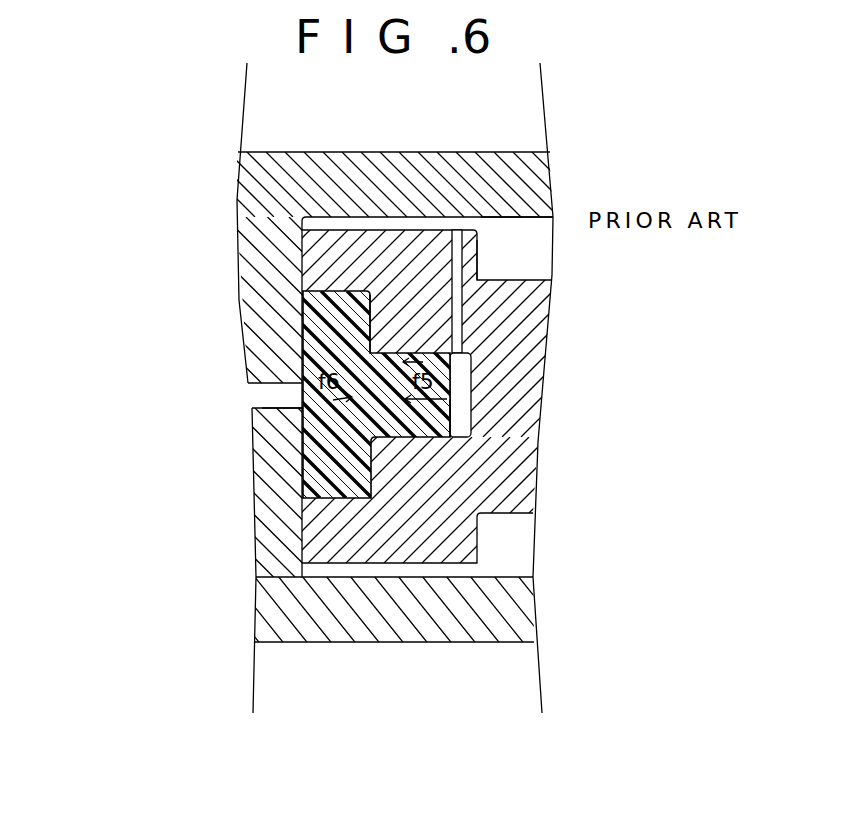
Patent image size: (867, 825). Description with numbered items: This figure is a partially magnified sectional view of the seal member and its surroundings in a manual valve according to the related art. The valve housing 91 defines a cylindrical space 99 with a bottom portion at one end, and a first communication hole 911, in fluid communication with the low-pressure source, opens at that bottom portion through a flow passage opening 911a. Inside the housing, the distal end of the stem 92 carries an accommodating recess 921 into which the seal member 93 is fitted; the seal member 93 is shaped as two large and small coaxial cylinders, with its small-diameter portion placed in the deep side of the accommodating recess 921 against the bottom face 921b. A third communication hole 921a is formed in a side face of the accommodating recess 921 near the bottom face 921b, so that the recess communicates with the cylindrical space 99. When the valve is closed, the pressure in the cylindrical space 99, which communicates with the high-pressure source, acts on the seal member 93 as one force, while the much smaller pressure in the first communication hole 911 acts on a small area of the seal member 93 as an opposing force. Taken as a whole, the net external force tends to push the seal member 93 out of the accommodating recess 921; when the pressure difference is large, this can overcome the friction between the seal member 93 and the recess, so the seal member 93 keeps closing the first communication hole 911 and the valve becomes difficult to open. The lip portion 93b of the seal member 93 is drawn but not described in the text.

The valve housing 91 is at (265, 237).
The first communication hole 911 is at (265, 397).
The flow passage opening 911a is at (295, 401).
The stem 92 is at (455, 491).
The accommodating recess 921 is at (373, 346).
The third communication hole 921a is at (455, 233).
The bottom face 921b is at (471, 370).
The seal member 93 is at (333, 463).
The seal lip portion 93b is at (471, 406).
The cylindrical space 99 is at (528, 245).